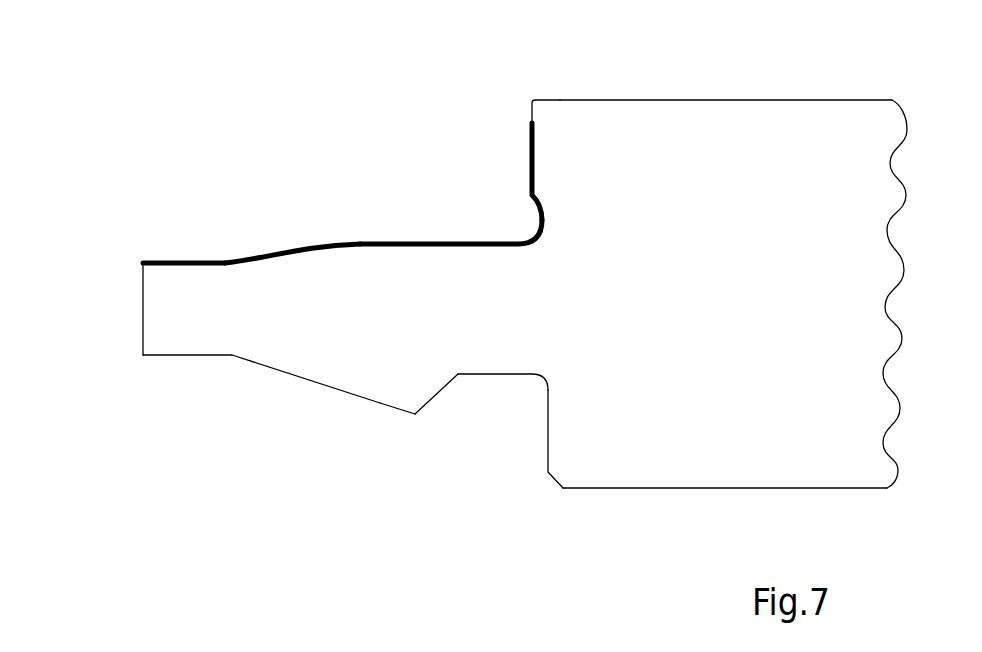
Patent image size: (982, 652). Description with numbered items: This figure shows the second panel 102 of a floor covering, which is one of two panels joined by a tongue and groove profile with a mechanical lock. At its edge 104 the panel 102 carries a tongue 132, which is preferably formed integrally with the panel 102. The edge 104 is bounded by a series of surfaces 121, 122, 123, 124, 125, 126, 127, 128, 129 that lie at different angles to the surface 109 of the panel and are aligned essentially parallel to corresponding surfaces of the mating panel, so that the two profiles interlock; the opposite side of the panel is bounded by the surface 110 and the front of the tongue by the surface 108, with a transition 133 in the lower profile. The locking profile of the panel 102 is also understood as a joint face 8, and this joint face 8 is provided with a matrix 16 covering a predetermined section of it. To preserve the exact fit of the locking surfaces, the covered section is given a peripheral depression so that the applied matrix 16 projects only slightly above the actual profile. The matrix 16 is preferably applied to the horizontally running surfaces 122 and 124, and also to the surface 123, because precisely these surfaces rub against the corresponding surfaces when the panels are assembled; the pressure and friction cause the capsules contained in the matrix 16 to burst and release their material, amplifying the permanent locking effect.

The joint face 8 is at (397, 135).
The matrix 16 is at (355, 242).
The panel 102 is at (747, 155).
The edge 104 is at (505, 105).
The front tip face 108 is at (143, 317).
The surface 109 is at (653, 98).
The lower side of base body 110 is at (648, 488).
The surface 121 is at (528, 142).
The surface 122 is at (428, 240).
The surface 123 is at (297, 253).
The surface 124 is at (188, 260).
The surface 125 is at (182, 357).
The surface 126 is at (310, 382).
The surface 127 is at (432, 400).
The surface 128 is at (487, 378).
The surface 129 is at (547, 452).
The tongue 132 is at (396, 323).
The lower transition edge 133 is at (400, 388).